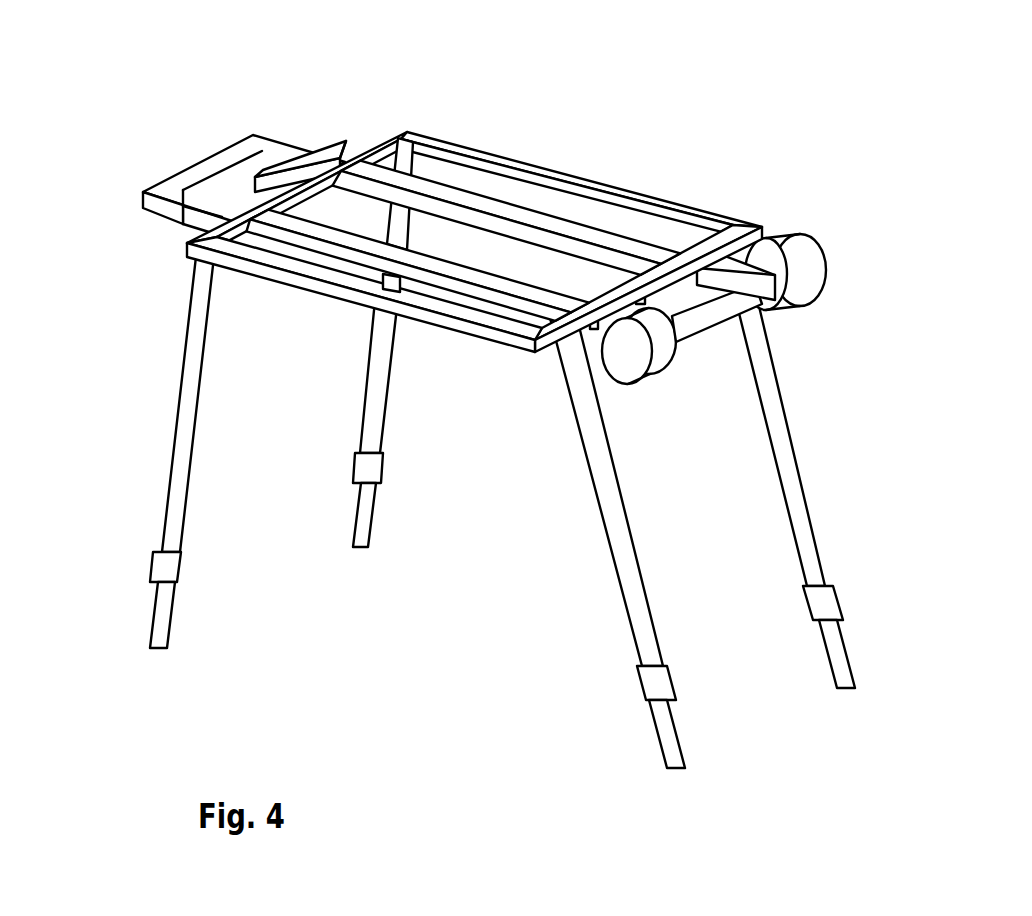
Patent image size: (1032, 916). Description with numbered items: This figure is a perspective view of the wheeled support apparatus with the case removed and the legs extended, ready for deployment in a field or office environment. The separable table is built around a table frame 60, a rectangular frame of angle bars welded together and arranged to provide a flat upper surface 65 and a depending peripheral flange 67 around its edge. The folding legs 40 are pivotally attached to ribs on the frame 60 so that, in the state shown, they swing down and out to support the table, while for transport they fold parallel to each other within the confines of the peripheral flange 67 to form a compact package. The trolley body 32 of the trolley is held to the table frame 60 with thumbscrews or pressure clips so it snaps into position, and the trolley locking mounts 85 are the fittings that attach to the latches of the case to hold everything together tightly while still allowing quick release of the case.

The trolley body 32 is at (475, 193).
The folding legs 40 is at (172, 464).
The table frame 60 is at (486, 205).
The flat upper surface 65 is at (552, 171).
The depending peripheral flange 67 is at (324, 289).
The trolley locking mounts 85 is at (313, 150).